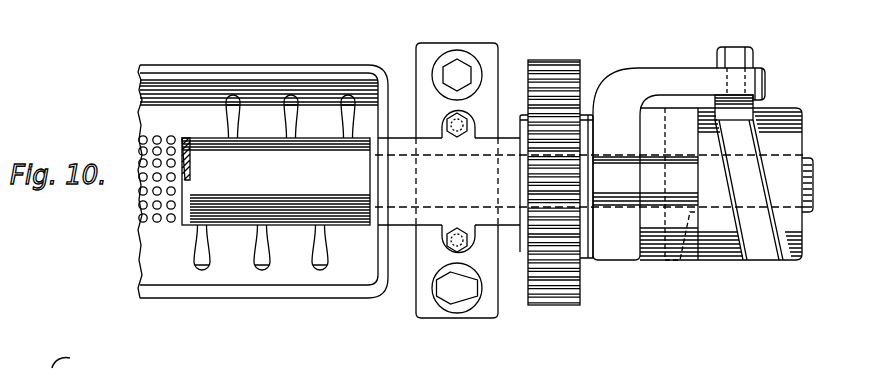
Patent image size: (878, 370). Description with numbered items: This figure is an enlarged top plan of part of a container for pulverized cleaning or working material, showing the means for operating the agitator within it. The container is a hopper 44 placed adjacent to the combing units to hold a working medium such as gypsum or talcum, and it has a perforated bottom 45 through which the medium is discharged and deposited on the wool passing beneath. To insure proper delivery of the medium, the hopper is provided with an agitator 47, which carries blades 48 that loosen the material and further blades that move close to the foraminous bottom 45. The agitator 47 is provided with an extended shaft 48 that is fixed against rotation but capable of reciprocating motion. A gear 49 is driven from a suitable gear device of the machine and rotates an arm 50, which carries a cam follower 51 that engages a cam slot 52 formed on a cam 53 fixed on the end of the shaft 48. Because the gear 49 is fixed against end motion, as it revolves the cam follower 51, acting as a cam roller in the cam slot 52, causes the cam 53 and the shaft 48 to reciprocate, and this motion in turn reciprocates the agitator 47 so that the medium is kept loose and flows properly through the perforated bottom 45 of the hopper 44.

The hopper 44 is at (258, 295).
The perforated bottom 45 is at (138, 193).
The agitator 47 is at (276, 181).
The extended shaft 48 is at (283, 109).
The gear 49 is at (557, 303).
The arm 50 is at (650, 73).
The cam follower 51 is at (753, 108).
The cam slot 52 is at (749, 190).
The cam 53 is at (790, 142).